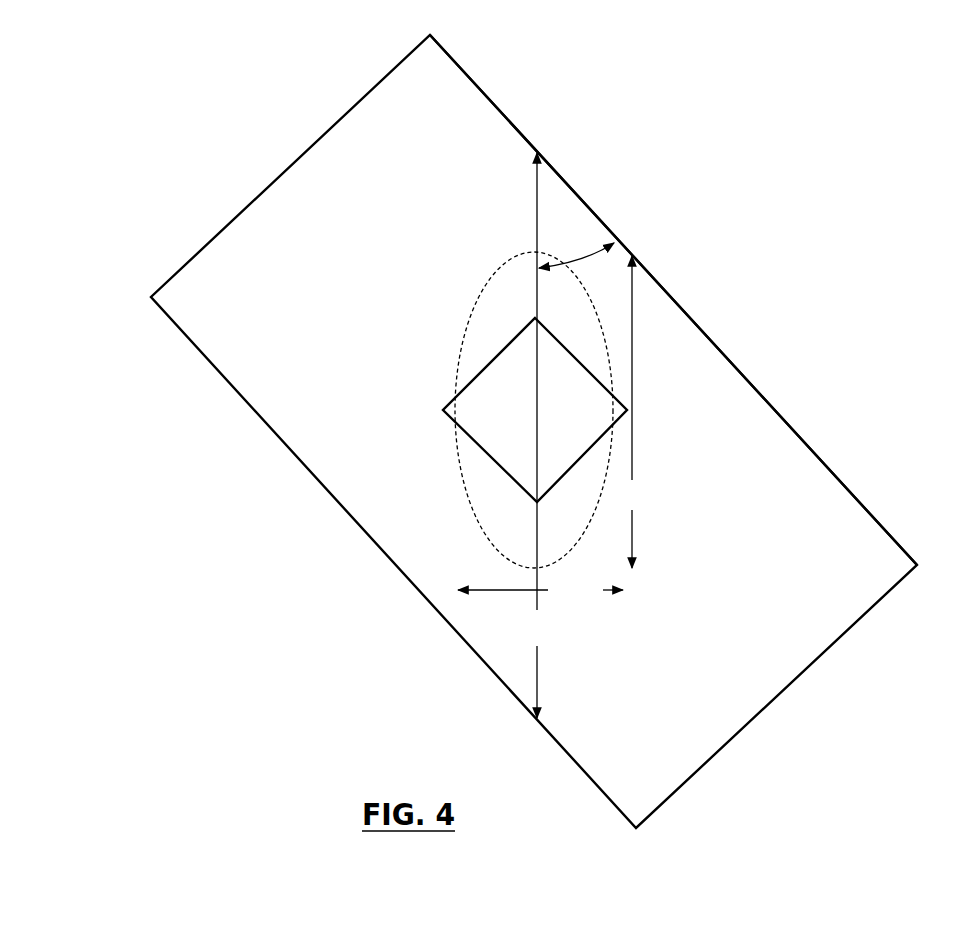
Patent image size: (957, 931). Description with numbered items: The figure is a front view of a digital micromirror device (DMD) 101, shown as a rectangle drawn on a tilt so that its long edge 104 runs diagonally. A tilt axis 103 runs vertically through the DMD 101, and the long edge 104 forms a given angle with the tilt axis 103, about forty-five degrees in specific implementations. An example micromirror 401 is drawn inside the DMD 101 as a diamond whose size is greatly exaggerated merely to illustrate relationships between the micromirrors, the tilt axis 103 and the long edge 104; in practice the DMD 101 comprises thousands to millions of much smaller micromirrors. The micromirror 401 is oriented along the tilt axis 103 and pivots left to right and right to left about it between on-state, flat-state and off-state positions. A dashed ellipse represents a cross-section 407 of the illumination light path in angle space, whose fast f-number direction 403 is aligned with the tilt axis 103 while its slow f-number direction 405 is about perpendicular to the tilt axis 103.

The digital micromirror device 101 is at (267, 308).
The tilt axis 103 is at (560, 644).
The long edge 104 is at (718, 348).
The micromirror 401 is at (512, 416).
The fast f-number direction 403 is at (655, 511).
The slow f-number direction 405 is at (598, 604).
The cross-section 407 is at (467, 323).